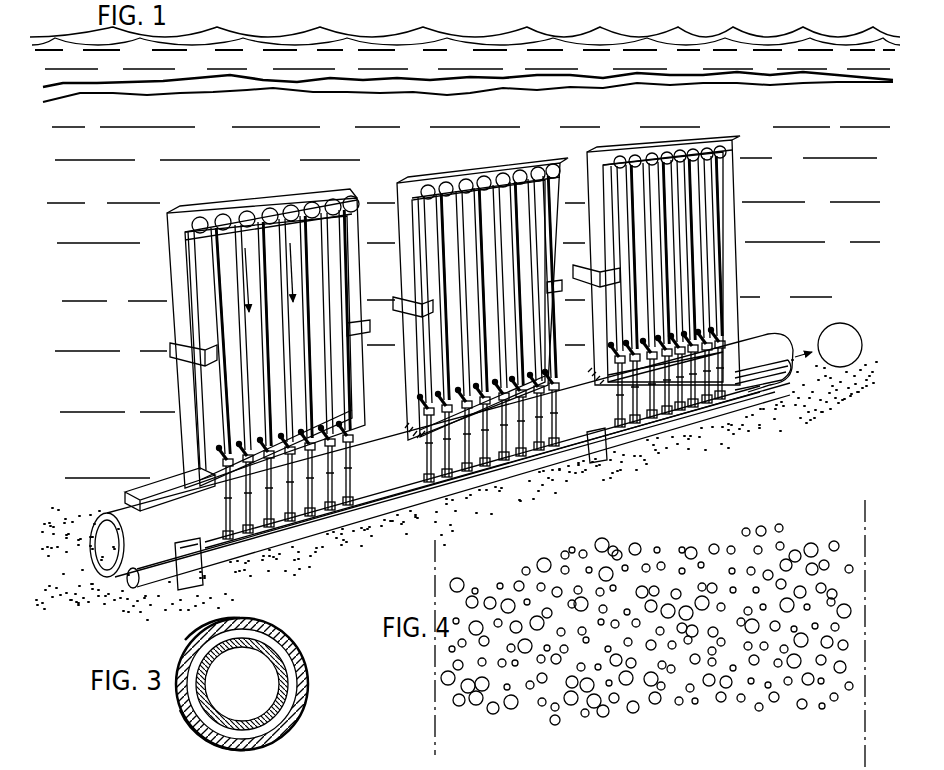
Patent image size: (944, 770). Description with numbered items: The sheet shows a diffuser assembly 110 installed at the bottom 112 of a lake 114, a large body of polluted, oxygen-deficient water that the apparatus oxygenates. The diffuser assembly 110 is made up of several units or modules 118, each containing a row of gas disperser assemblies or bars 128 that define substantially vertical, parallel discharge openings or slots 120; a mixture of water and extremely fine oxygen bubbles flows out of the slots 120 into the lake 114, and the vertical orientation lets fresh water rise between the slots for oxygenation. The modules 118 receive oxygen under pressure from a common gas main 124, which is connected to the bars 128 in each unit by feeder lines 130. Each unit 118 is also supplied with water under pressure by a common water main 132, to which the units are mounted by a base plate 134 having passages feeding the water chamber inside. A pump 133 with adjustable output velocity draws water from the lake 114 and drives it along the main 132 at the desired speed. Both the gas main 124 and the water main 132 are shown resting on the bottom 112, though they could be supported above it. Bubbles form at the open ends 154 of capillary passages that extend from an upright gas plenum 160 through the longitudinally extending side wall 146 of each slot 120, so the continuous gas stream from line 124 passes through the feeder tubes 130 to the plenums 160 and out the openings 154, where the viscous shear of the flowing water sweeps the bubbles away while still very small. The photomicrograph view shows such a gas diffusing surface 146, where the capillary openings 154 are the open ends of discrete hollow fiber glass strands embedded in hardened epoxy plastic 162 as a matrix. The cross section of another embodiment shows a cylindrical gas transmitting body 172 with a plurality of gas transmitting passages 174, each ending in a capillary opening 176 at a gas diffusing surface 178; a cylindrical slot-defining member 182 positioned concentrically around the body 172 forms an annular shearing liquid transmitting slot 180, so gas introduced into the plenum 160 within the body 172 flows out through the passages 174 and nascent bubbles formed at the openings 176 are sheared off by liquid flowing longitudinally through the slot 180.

In FIG. 1, the diffuser assembly 110 is at (770, 189).
In FIG. 1, the bottom of the lake 112 is at (777, 461).
In FIG. 1, the lake 114 is at (503, 17).
In FIG. 1, the units or modules 118 is at (417, 166).
In FIG. 1, the discharge openings or slots 120 is at (244, 257).
In FIG. 1, the gas main 124 is at (421, 508).
In FIG. 1, the gas disperser assemblies or bars 128 is at (254, 381).
In FIG. 1, the feeder lines 130 is at (378, 458).
In FIG. 1, the water main 132 is at (123, 518).
In FIG. 1, the pump 133 is at (832, 323).
In FIG. 1, the base plate 134 is at (167, 483).
In FIG. 4, the side wall of slot 146 is at (704, 725).
In FIG. 4, the open ends of capillary passages 154 is at (612, 547).
In FIG. 3, the gas plenum 160 is at (262, 680).
In FIG. 4, the hardened epoxy plastic 162 is at (490, 598).
In FIG. 3, the cylindrical gas transmitting body 172 is at (260, 648).
In FIG. 3, the gas transmitting passages 174 is at (254, 719).
In FIG. 3, the capillary opening 176 is at (272, 662).
In FIG. 3, the gas diffusing surface 178 is at (282, 722).
In FIG. 3, the annular shearing liquid transmitting slot 180 is at (205, 722).
In FIG. 3, the cylindrical slot-defining member 182 is at (200, 625).